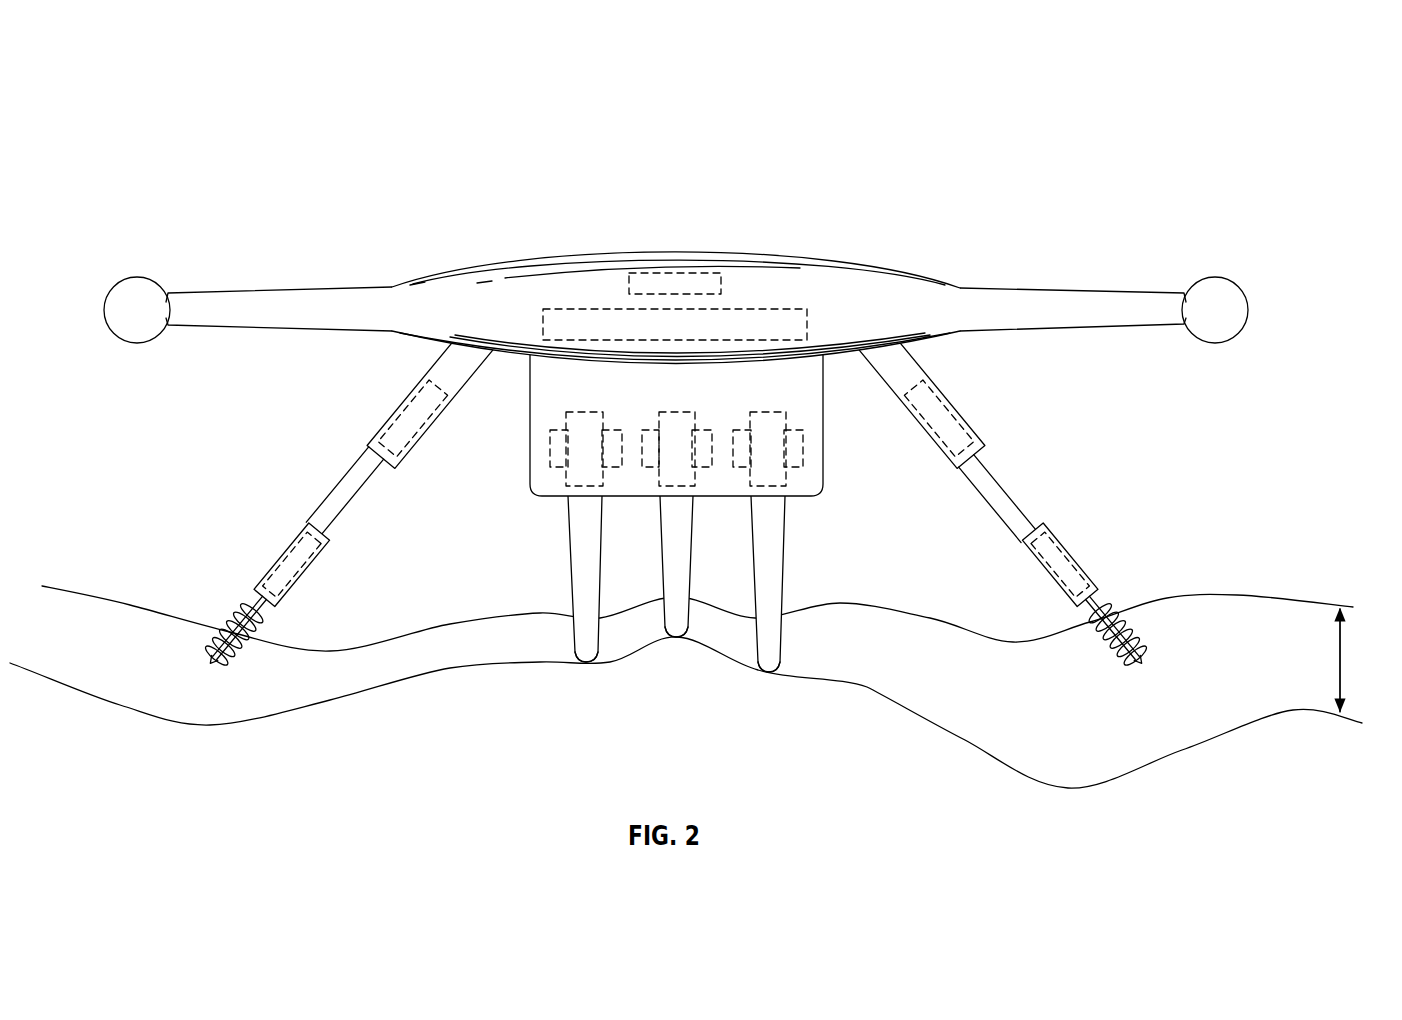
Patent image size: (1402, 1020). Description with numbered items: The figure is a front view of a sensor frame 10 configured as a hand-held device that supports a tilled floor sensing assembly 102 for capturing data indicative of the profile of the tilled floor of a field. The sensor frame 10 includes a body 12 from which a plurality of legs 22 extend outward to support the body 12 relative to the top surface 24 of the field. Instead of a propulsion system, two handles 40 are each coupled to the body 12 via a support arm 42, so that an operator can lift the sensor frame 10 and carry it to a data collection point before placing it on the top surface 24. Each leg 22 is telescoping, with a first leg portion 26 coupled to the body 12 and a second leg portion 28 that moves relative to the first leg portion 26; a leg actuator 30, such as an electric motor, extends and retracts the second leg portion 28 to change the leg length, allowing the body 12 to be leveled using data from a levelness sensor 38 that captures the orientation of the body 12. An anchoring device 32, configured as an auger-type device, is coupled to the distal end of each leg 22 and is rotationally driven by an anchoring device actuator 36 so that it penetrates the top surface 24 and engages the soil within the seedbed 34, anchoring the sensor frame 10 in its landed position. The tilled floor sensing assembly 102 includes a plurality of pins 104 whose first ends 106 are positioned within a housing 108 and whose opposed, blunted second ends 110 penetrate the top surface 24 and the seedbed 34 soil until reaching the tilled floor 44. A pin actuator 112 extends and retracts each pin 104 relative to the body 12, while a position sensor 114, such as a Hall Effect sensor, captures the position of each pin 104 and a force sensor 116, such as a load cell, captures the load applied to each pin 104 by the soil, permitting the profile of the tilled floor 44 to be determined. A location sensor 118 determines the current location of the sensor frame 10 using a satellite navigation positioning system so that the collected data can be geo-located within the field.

The sensor frame 10 is at (342, 172).
The body 12 is at (527, 258).
The leg 22 is at (320, 505).
The top surface 24 is at (1272, 595).
The first leg portion 26 is at (440, 382).
The second leg portion 28 is at (327, 547).
The leg actuator 30 is at (383, 432).
The anchoring device 32 is at (198, 646).
The seedbed 34 is at (1340, 652).
The anchoring device actuator 36 is at (265, 570).
The levelness sensor 38 is at (765, 308).
The handle 40 is at (143, 283).
The support arm 42 is at (272, 291).
The tilled floor 44 is at (1302, 712).
The tilled floor sensing assembly 102 is at (450, 467).
The pin 104 is at (560, 580).
The first end 106 is at (550, 507).
The housing 108 is at (530, 412).
The second end 110 is at (580, 688).
The pin actuator 112 is at (578, 412).
The position sensor 114 is at (550, 455).
The force sensor 116 is at (603, 438).
The location sensor 118 is at (676, 272).